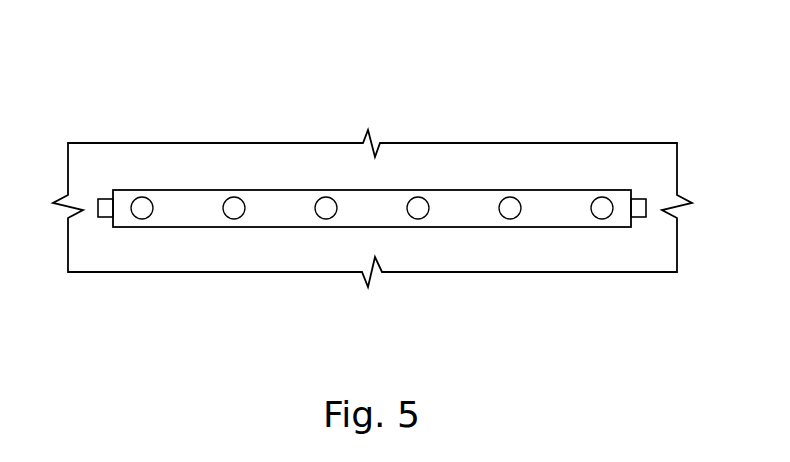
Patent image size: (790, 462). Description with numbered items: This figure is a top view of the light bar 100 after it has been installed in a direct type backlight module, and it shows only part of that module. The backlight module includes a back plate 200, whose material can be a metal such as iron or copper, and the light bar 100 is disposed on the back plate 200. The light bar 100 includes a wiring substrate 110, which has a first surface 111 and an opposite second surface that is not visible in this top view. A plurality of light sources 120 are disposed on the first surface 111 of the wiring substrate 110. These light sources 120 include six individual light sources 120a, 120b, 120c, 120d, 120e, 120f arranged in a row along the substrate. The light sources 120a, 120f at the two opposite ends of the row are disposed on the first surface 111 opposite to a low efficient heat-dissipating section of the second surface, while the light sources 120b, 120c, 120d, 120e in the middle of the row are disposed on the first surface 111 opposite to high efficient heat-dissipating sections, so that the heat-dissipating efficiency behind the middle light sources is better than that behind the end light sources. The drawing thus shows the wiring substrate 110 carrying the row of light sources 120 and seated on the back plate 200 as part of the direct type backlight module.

The light bar 100 is at (365, 199).
The wiring substrate 110 is at (100, 207).
The first surface 111 is at (470, 203).
The light sources 120 is at (678, 70).
The light source 120a is at (142, 208).
The light source 120b is at (234, 208).
The light source 120c is at (326, 208).
The light source 120d is at (418, 208).
The light source 120e is at (510, 208).
The light source 120f is at (602, 208).
The back plate 200 is at (295, 272).